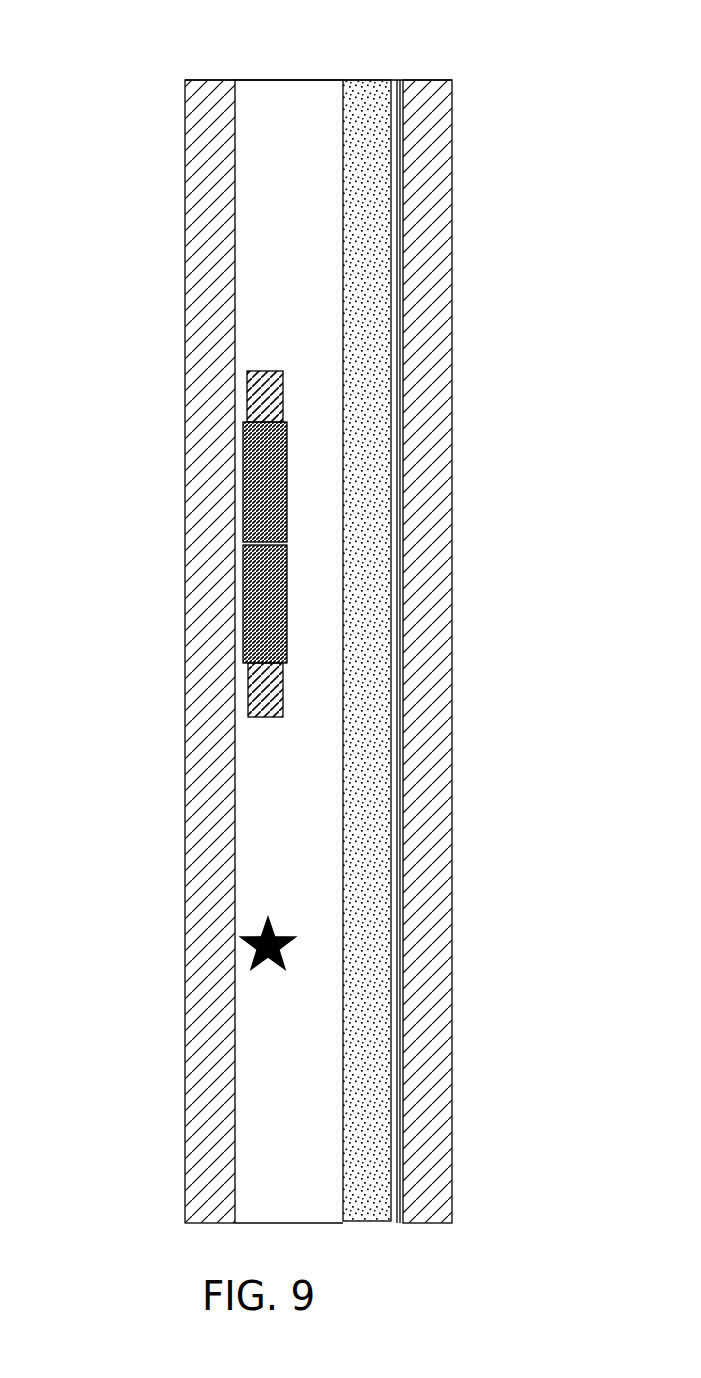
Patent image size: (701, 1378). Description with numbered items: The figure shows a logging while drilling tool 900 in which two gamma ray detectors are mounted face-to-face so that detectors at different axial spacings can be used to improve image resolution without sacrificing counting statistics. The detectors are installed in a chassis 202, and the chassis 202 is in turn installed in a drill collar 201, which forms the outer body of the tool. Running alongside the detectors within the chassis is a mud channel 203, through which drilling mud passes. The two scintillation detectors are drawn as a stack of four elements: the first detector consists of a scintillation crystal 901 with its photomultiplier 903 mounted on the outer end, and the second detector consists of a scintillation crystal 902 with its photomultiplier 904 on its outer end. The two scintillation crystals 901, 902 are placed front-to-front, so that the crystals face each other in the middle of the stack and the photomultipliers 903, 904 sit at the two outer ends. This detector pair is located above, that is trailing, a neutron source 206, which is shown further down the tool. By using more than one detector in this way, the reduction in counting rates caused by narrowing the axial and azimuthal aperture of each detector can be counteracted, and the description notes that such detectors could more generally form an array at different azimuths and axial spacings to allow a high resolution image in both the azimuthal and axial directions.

The display device structure 900 is at (383, 53).
The drill collar 201 is at (442, 143).
The chassis 202 is at (270, 245).
The mud channel 203 is at (383, 280).
The photomultiplier 903 is at (247, 393).
The scintillation crystal 901 is at (247, 485).
The scintillation crystal 902 is at (247, 573).
The photomultiplier 904 is at (250, 683).
The neutron source 206 is at (288, 948).